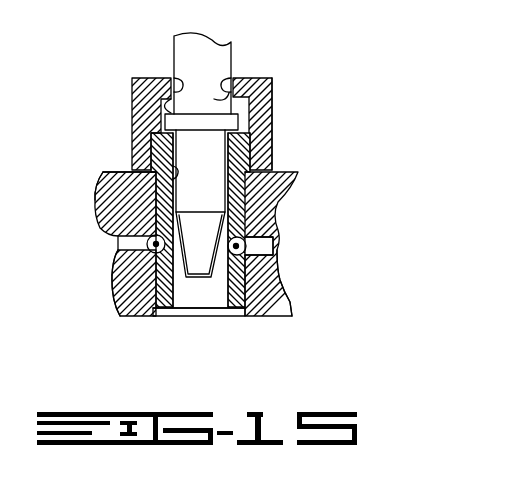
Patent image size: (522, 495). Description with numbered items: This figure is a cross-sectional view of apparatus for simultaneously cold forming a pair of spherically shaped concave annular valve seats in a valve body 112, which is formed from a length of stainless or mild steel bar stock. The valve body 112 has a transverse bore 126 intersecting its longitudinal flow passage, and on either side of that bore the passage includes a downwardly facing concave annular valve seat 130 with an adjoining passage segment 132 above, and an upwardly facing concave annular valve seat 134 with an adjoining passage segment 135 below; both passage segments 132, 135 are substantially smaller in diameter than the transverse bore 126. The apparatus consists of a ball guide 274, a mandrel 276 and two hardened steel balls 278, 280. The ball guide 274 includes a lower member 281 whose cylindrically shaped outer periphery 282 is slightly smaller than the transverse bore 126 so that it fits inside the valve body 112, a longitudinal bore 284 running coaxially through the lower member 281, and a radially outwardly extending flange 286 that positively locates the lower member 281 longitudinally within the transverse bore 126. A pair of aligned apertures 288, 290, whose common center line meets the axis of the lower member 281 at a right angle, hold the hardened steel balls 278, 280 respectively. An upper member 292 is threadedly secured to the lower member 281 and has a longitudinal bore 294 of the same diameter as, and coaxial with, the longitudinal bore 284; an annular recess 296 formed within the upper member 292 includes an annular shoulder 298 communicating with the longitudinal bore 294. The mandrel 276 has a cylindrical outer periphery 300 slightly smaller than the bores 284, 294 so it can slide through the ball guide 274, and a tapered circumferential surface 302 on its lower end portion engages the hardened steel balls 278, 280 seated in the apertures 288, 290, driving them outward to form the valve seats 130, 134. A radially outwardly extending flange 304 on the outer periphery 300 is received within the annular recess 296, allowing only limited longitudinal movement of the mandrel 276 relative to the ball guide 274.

The valve body 112 is at (203, 184).
The transverse bore 126 is at (153, 187).
The downwardly facing spherically shaped concave annular valve seat 130 is at (115, 277).
The passage segment 132 is at (148, 247).
The upwardly facing spherically shaped concave annular valve seat 134 is at (247, 257).
The passage segment 135 is at (267, 240).
The ball guide 274 is at (268, 158).
The mandrel 276 is at (263, 107).
The hardened steel ball 278 is at (118, 253).
The hardened steel ball 280 is at (255, 242).
The lower member 281 is at (277, 198).
The cylindrically shaped outer periphery 282 is at (100, 217).
The longitudinal bore 284 is at (105, 171).
The radially outwardly extending flange 286 is at (153, 155).
The aperture 288 is at (118, 297).
The aperture 290 is at (222, 314).
The upper member 292 is at (272, 104).
The longitudinal bore 294 is at (177, 80).
The annular recess 296 is at (158, 100).
The annular shoulder 298 is at (226, 92).
The cylindrical outer periphery 300 is at (205, 157).
The tapered circumferential surface 302 is at (203, 263).
The radially outwardly extending flange 304 is at (202, 122).